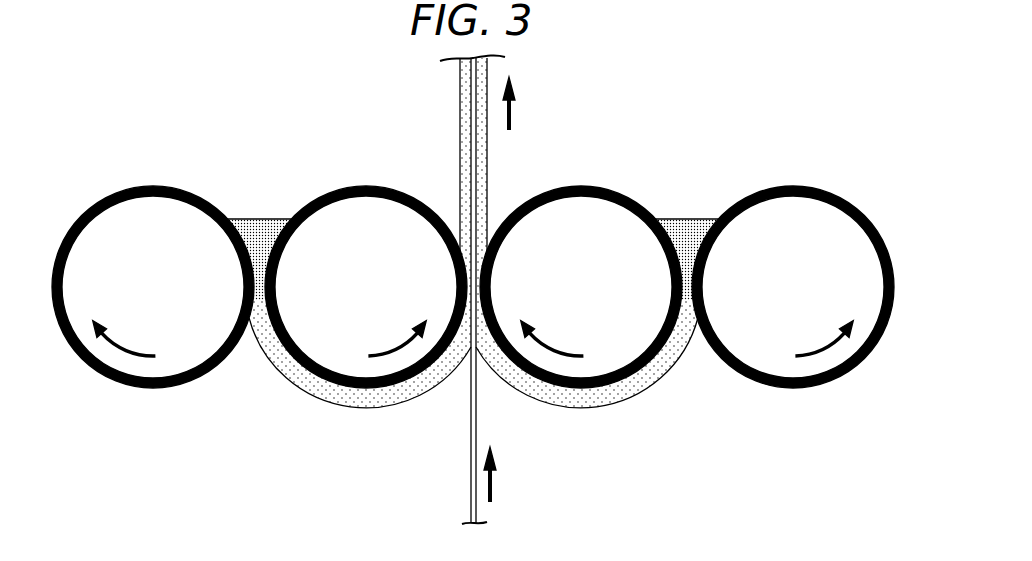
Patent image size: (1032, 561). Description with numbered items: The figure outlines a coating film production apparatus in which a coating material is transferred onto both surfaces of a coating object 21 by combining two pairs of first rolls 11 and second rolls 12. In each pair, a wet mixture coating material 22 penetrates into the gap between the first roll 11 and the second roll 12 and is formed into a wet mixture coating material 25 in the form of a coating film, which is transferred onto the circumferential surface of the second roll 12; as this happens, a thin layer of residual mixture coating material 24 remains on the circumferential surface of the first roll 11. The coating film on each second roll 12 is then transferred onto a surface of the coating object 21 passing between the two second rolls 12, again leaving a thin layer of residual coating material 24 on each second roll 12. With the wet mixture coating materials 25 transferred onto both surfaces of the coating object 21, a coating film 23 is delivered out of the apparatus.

The first roll 11 is at (100, 237).
The second roll 12 is at (407, 237).
The coating object 21 is at (471, 475).
The wet mixture coating material 22 is at (260, 220).
The coating film 23 is at (460, 103).
The residual mixture coating material 24 is at (367, 183).
The wet mixture coating material in the form of a coating film 25 is at (368, 400).